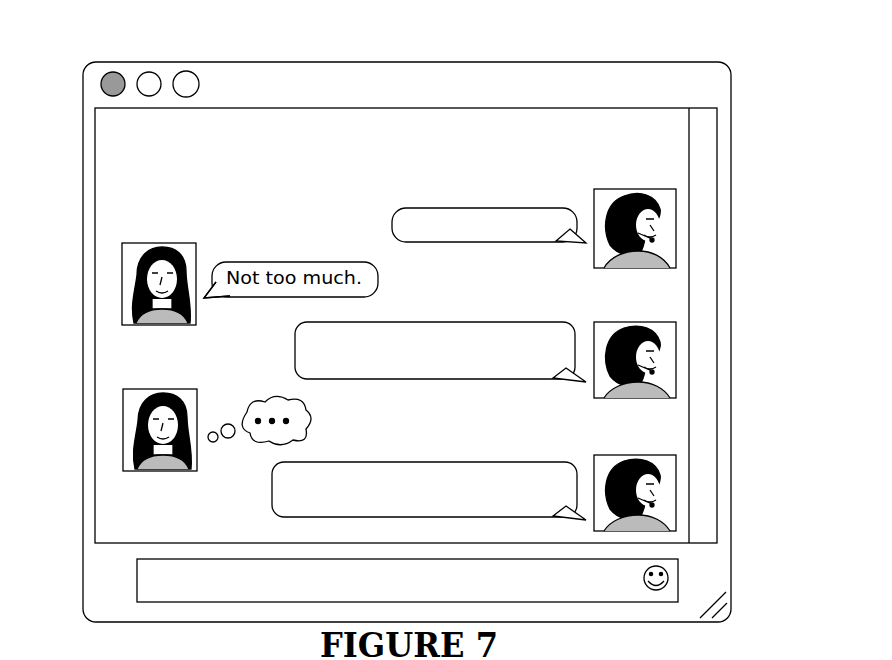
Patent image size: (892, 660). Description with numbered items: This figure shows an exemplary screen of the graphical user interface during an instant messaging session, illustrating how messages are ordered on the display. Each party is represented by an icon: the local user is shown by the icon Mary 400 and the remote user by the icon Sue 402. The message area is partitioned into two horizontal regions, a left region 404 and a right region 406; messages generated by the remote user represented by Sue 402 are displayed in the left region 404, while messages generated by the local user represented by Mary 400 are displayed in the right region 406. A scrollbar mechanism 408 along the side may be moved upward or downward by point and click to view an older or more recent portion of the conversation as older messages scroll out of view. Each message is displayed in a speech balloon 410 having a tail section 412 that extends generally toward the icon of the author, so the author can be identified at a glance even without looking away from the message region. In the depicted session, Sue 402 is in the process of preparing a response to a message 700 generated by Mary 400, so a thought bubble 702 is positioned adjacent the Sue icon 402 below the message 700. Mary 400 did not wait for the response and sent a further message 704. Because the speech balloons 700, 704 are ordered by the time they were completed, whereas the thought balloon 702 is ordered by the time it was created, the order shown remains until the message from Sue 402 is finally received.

The Mary icon 400 is at (698, 156).
The Sue icon 402 is at (133, 212).
The left region 404 is at (135, 132).
The right region 406 is at (657, 130).
The scrollbar mechanism 408 is at (710, 357).
The speech balloon 410 is at (486, 208).
The tail section 412 is at (569, 245).
The message 700 is at (378, 378).
The thought bubble 702 is at (263, 446).
The message 704 is at (500, 461).